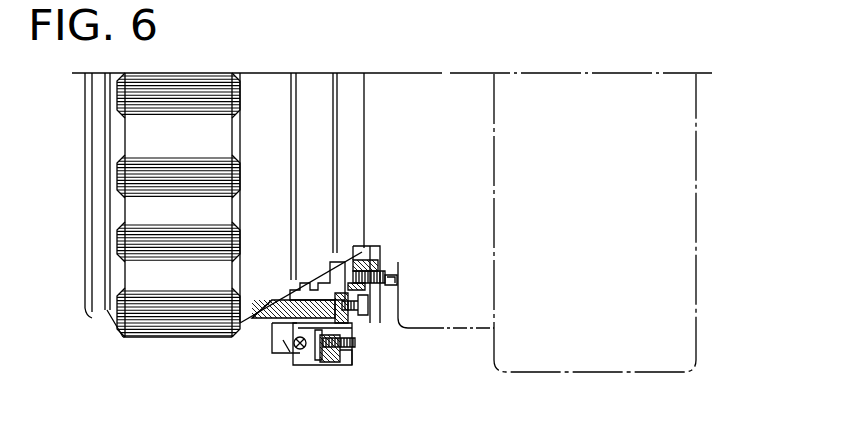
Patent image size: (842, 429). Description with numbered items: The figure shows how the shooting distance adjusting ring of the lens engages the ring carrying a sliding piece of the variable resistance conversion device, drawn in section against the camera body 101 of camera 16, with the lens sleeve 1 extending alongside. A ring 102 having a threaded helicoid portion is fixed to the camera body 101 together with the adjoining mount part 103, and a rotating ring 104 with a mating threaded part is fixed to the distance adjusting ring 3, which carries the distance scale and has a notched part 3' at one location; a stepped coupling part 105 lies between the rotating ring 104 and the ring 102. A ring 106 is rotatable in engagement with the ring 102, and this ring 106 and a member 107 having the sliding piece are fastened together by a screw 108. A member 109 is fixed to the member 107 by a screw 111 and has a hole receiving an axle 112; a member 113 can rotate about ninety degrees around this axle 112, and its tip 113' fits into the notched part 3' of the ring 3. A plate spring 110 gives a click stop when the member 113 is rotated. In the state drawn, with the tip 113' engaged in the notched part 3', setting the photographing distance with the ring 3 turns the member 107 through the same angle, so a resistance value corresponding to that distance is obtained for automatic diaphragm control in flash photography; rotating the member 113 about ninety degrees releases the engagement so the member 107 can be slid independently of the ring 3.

The lens barrel sleeve 1 is at (96, 318).
The distance adjusting ring 3 is at (178, 224).
The notched part 3' is at (252, 332).
The camera 16 is at (602, 1).
The camera body 101 is at (527, 357).
The ring 102 is at (362, 252).
The housing 103 is at (385, 264).
The rotating ring 104 is at (302, 286).
The toothed coupling member 105 is at (330, 272).
The ring 106 is at (352, 342).
The member having a sliding piece 107 is at (352, 356).
The screw 108 is at (362, 311).
The member 109 is at (346, 364).
The plate spring 110 is at (322, 356).
The screw 111 is at (338, 364).
The axle 112 is at (298, 350).
The member 113 is at (269, 364).
The tip 113' is at (259, 362).